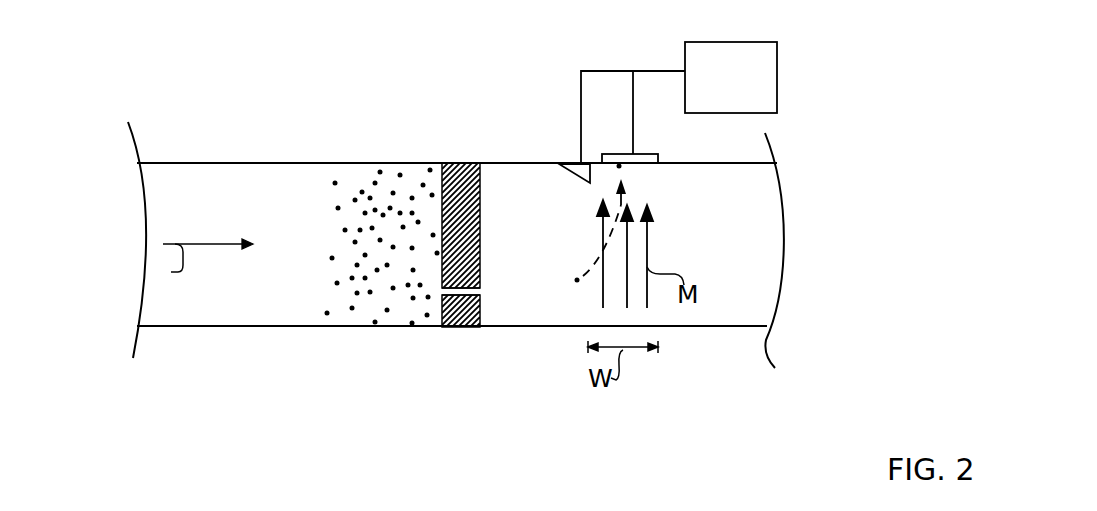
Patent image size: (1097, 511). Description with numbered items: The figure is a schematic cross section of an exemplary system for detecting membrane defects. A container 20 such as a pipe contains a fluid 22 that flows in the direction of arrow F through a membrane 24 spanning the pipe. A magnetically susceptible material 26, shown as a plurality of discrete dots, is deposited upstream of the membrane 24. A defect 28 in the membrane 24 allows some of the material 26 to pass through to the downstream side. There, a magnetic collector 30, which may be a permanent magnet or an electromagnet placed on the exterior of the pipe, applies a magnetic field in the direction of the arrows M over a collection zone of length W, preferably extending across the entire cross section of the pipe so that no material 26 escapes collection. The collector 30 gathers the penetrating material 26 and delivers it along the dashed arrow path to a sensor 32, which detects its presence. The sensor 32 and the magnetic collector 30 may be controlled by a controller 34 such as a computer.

The container 20 is at (227, 162).
The fluid 22 is at (247, 209).
The membrane 24 is at (468, 162).
The magnetically susceptible material 26 is at (364, 326).
The defect 28 is at (474, 292).
The magnetic collector 30 is at (660, 163).
The sensor 32 is at (567, 163).
The controller 34 is at (685, 50).